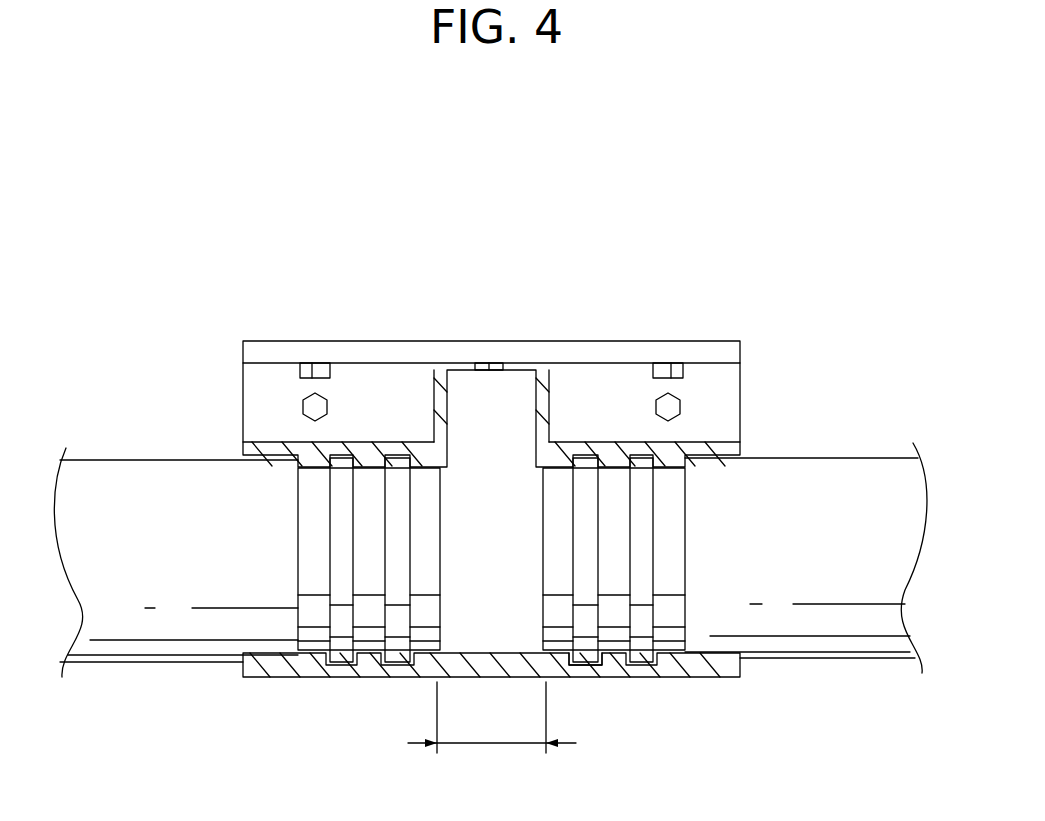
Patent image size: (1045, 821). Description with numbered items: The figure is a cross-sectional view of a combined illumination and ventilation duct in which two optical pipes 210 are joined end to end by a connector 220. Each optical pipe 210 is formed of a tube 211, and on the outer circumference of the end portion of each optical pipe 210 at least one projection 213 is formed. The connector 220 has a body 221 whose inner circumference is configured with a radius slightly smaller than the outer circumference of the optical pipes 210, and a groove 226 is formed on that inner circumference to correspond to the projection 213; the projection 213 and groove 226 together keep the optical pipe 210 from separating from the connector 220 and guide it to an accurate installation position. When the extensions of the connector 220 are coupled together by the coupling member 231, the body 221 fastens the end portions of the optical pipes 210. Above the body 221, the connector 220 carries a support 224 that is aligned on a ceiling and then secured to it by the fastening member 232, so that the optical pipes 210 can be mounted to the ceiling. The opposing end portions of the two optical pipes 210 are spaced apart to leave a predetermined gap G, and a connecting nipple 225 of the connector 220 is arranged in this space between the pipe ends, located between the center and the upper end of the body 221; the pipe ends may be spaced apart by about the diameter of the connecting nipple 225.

The optical pipe 210 is at (490, 550).
The tube 211 is at (143, 628).
The projection 213 is at (398, 649).
The connector 220 is at (455, 355).
The body 221 is at (491, 723).
The support 224 is at (630, 351).
The connecting nipple 225 is at (436, 405).
The groove 226 is at (588, 655).
The coupling member 231 is at (303, 407).
The fastening member 232 is at (306, 373).
The gap G is at (492, 735).